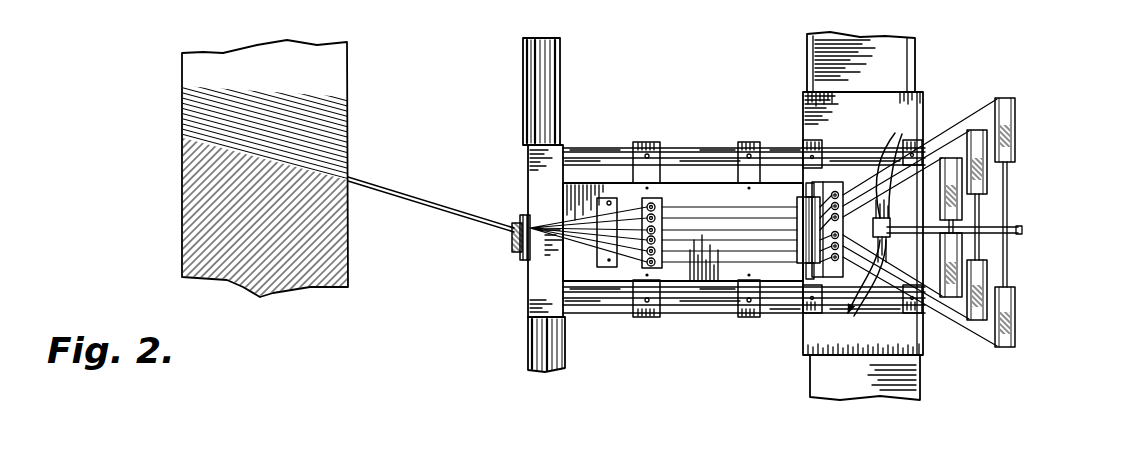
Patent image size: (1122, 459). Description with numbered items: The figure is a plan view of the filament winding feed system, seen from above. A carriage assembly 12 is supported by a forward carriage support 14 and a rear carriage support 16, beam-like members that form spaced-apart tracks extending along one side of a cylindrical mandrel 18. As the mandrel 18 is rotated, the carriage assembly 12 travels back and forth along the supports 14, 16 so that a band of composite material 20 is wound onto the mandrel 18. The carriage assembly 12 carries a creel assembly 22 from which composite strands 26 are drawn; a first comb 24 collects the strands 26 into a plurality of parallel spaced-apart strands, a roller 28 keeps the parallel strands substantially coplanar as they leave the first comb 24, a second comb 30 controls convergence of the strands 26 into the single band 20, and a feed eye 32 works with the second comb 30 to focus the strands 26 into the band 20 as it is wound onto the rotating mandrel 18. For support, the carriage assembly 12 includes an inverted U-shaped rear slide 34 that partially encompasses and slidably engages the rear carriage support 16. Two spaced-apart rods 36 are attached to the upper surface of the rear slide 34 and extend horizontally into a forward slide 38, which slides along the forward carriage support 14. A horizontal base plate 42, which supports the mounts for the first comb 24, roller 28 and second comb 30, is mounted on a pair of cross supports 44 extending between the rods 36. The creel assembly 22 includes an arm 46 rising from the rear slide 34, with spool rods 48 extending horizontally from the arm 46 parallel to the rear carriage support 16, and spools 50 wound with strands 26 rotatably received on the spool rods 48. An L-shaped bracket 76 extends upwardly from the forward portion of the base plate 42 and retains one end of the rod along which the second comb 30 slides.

The carriage assembly 12 is at (710, 318).
The forward carriage support 14 is at (570, 353).
The rear carriage support 16 is at (917, 63).
The cylindrical mandrel 18 is at (350, 263).
The band of composite material 20 is at (410, 193).
The creel assembly 22 is at (1025, 219).
The first comb 24 is at (838, 174).
The composite strands 26 is at (878, 229).
The roller 28 is at (803, 205).
The second comb 30 is at (668, 178).
The feed eye 32 is at (506, 256).
The rear slide 34 is at (813, 103).
The spaced-apart rods 36 is at (596, 148).
The forward slide 38 is at (533, 167).
The horizontal base plate 42 is at (750, 276).
The cross supports 44 is at (641, 150).
The arm 46 is at (1024, 230).
The spool rods 48 is at (1010, 175).
The spools 50 is at (972, 130).
The L-shaped bracket 76 is at (600, 268).